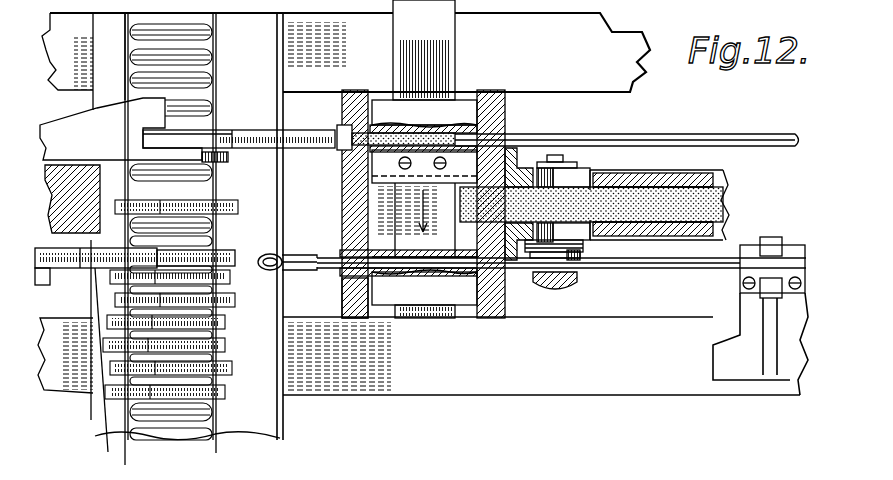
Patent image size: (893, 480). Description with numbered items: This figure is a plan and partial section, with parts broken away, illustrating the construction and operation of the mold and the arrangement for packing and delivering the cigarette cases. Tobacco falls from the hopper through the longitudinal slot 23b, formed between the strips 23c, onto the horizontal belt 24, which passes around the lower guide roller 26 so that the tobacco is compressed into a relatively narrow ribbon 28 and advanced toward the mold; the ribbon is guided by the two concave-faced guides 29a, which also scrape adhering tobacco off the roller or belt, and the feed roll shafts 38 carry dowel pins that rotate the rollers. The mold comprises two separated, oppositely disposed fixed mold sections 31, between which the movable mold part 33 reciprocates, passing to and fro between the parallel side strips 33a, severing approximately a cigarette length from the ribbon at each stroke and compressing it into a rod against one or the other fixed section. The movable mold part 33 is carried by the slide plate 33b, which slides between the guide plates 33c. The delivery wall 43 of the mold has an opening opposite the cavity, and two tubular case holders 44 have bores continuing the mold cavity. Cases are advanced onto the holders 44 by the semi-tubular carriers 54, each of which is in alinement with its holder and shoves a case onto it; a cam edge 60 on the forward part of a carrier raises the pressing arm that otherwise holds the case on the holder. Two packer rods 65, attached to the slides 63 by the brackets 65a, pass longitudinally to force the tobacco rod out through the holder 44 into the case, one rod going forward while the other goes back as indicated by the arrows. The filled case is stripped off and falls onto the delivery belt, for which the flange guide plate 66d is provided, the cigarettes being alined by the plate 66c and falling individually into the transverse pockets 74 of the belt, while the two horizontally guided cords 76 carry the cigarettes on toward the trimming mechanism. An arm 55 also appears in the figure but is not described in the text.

The longitudinal slot 23b is at (695, 185).
The strips 23c is at (660, 180).
The horizontal belt 24 is at (590, 176).
The lower guide roller 26 is at (572, 160).
The ribbon 28 is at (705, 208).
The guides 29a is at (520, 158).
The fixed mold sections 31 is at (463, 103).
The movable mold part 33 is at (372, 170).
The parallel side strips 33a is at (476, 238).
The slide plate 33b is at (424, 50).
The guide plates 33c is at (345, 200).
The feed roll shafts 38 is at (560, 295).
The delivery wall 43 is at (342, 287).
The case holders 44 is at (340, 128).
The semi-tubular carriers 54 is at (265, 125).
The arm 55 is at (121, 129).
The cam edge 60 is at (226, 161).
The slides 63 is at (429, 204).
The packer rods 65 is at (590, 132).
The brackets 65a is at (748, 247).
The plate 66c is at (102, 422).
The flange guide plate 66d is at (277, 298).
The transverse pockets 74 is at (217, 438).
The cords 76 is at (130, 460).